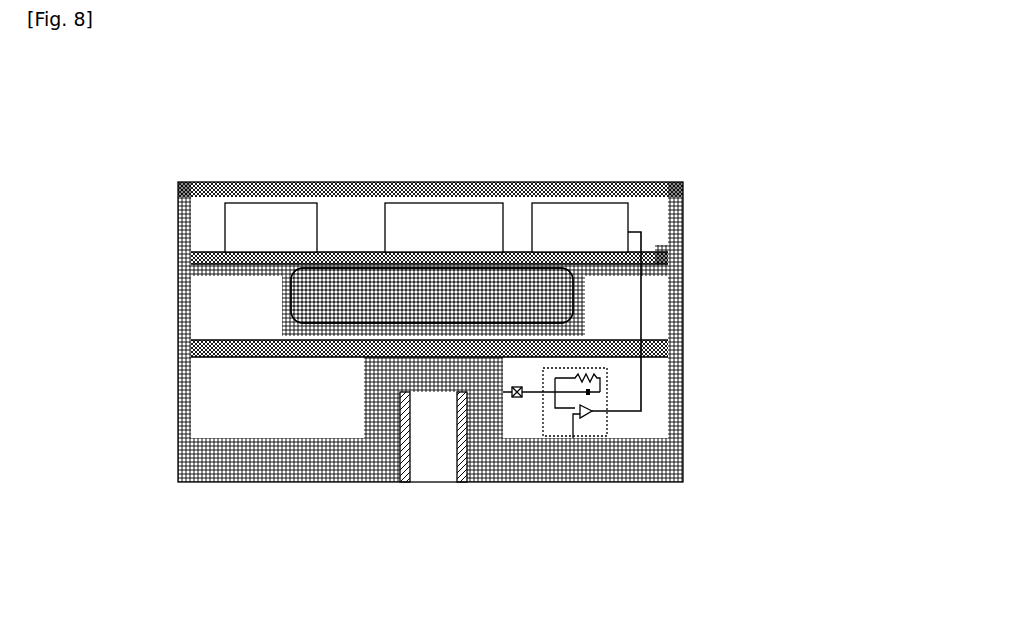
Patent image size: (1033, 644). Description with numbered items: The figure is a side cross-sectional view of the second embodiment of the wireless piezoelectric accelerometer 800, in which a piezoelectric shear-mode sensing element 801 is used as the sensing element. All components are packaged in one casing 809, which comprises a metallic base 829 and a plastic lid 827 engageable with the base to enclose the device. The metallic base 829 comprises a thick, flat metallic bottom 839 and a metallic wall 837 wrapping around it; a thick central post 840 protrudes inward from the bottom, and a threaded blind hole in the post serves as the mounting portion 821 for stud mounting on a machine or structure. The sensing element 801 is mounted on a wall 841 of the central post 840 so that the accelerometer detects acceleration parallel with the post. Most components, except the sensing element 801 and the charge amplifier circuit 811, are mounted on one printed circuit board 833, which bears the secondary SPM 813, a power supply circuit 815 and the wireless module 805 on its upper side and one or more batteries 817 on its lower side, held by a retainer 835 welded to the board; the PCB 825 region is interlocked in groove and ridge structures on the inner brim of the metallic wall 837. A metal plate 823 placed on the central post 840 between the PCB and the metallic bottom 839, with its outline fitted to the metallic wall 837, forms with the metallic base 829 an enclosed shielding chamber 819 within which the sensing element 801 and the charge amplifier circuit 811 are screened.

The wireless piezoelectric accelerometer 800 is at (480, 344).
The piezoelectric shear-mode sensing element 801 is at (533, 445).
The wireless module 805 is at (277, 205).
The casing 809 is at (498, 304).
The charge amplifier circuit 811 is at (606, 422).
The secondary SPM 813 is at (594, 205).
The power supply circuit 815 is at (462, 205).
The battery 817 is at (432, 295).
The metallic shielding chamber 819 is at (657, 408).
The mounting portion 821 is at (431, 452).
The metal plate 823 is at (195, 346).
The PCB 825 is at (204, 242).
The plastic lid 827 is at (195, 182).
The metallic base 829 is at (683, 410).
The printed circuit board 833 is at (657, 246).
The retainer 835 is at (280, 303).
The metallic wall 837 is at (683, 382).
The metallic bottom 839 is at (298, 445).
The central post 840 is at (388, 420).
The wall of the central post 841 is at (462, 488).